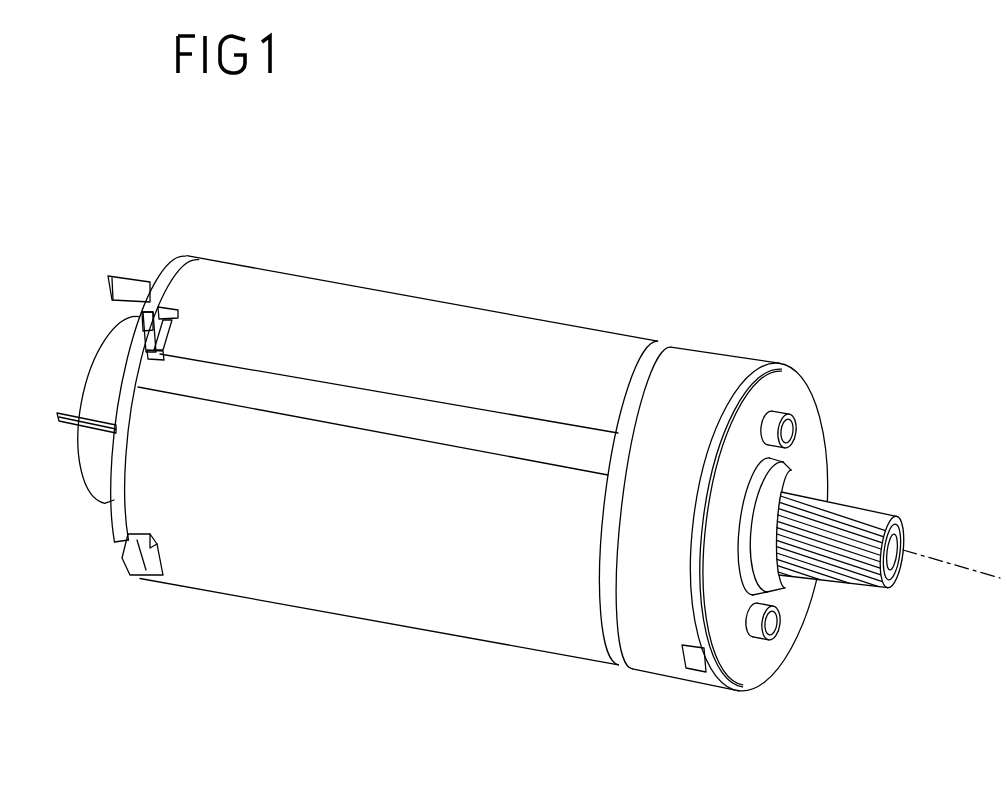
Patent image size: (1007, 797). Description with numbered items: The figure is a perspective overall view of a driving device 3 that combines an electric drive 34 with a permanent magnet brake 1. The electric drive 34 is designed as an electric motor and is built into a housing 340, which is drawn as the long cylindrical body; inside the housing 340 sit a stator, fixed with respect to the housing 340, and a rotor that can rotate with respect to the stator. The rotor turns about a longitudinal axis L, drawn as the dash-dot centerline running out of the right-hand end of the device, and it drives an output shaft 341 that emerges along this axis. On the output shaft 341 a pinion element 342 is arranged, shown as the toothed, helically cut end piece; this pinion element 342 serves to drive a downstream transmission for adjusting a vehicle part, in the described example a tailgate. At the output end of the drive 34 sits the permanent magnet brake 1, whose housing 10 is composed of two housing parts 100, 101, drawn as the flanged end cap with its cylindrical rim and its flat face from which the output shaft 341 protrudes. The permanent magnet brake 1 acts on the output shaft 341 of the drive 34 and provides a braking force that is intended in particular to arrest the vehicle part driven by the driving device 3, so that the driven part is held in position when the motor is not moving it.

The permanent magnet brake 1 is at (528, 439).
The driving device 3 is at (364, 423).
The electric drive 34 is at (364, 451).
The housing 340 is at (488, 625).
The output shaft 341 is at (872, 567).
The pinion element 342 is at (893, 590).
The housing part 100 is at (748, 514).
The housing part 101 is at (806, 405).
The housing 10 is at (675, 666).
The longitudinal axis L is at (961, 567).